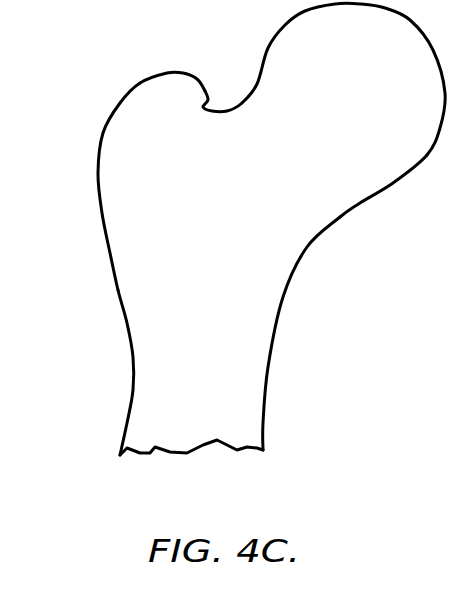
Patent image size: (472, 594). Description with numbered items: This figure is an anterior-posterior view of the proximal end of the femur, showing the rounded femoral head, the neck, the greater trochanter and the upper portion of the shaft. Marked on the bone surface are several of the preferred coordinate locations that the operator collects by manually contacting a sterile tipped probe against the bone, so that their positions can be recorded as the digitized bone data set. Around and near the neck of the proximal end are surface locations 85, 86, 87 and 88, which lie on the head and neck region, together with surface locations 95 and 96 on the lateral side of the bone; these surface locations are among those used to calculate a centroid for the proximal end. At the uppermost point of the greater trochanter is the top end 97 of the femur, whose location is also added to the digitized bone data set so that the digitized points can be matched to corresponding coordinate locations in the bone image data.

The surface location 85 is at (300, 172).
The surface location 86 is at (272, 200).
The surface location 87 is at (263, 125).
The surface location 88 is at (233, 148).
The surface location 95 is at (127, 173).
The surface location 96 is at (135, 238).
The top end of the femur 97 is at (143, 87).